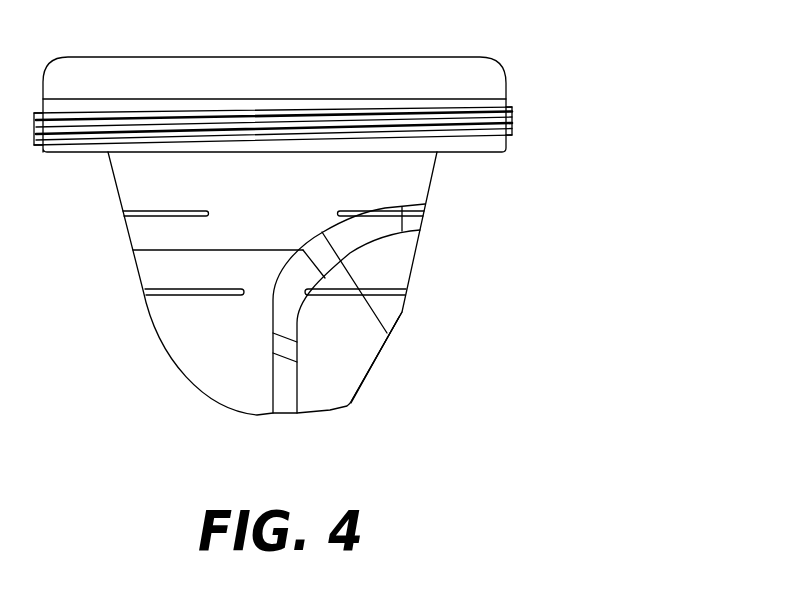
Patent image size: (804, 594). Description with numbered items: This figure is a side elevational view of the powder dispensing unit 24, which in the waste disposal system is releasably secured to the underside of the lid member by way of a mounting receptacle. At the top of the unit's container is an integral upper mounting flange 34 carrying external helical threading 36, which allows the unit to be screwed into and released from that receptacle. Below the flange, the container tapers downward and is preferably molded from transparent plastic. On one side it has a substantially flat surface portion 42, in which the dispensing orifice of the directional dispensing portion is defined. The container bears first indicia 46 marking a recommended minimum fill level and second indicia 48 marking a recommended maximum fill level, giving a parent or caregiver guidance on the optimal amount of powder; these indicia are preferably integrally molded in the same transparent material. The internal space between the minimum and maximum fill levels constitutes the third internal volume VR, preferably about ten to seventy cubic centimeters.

The upper mounting flange 34 is at (504, 102).
The external helical threading 36 is at (512, 128).
The powder dispensing unit 24 is at (481, 227).
The third internal volume VR is at (396, 264).
The substantially flat surface portion 42 is at (362, 383).
The second indicia 48 is at (143, 212).
The first indicia 46 is at (173, 293).